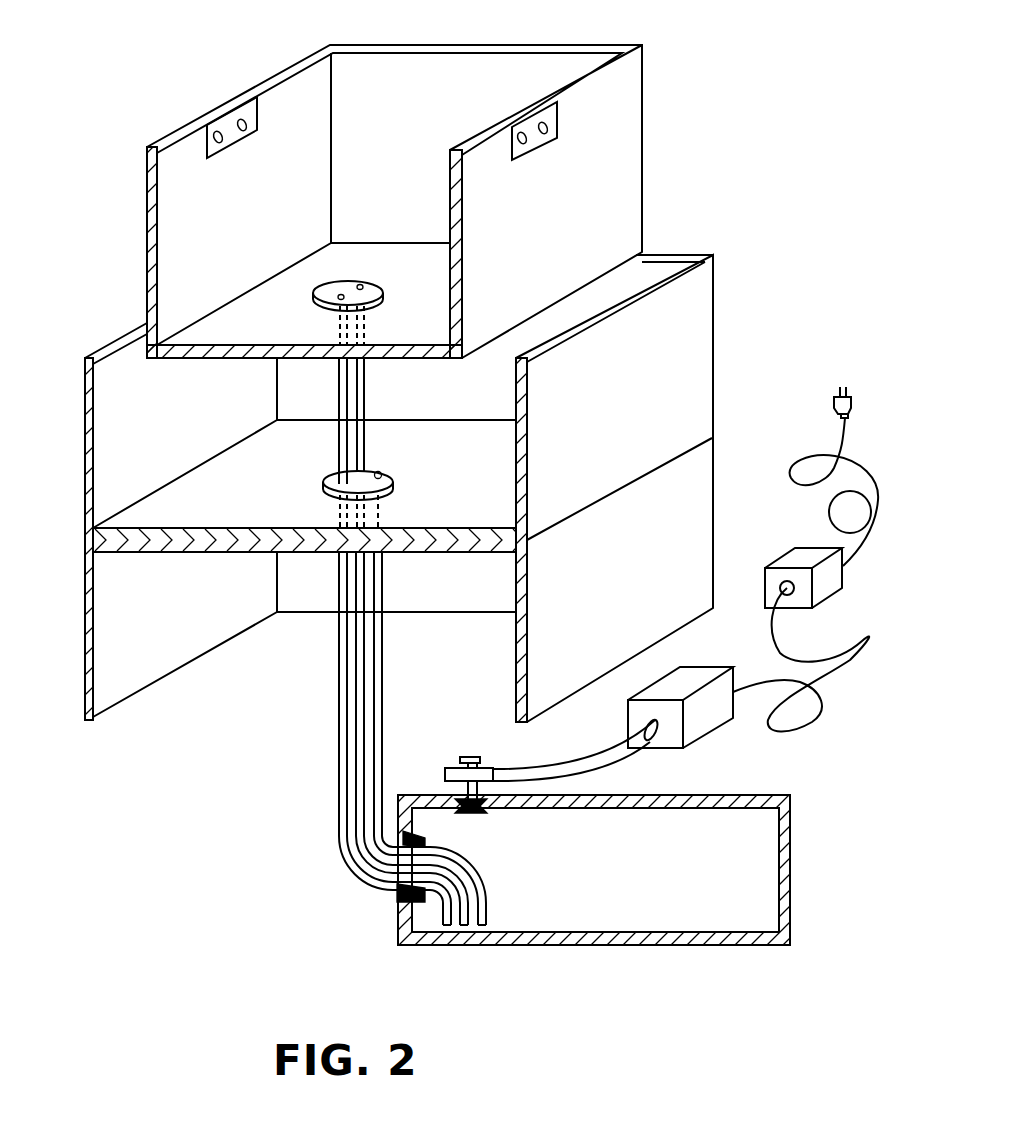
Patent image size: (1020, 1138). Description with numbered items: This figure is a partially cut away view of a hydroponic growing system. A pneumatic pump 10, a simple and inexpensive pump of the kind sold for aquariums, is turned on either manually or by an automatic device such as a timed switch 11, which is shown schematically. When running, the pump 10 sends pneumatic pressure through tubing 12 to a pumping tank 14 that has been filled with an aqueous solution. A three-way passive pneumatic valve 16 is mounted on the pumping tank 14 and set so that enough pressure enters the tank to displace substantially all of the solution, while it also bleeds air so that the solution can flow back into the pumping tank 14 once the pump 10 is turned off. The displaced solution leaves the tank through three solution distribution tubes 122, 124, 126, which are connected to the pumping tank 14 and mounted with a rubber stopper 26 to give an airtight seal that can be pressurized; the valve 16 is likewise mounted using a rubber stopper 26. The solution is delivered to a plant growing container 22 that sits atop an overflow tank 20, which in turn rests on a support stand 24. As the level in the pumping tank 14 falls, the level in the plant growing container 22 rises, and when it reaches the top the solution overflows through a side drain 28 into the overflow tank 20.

The pneumatic pump 10 is at (697, 728).
The timed switch 11 is at (833, 592).
The tubing 12 is at (602, 757).
The pumping tank 14 is at (605, 947).
The passive pneumatic valve 16 is at (458, 767).
The overflow tank 20 is at (403, 488).
The plant growing container 22 is at (145, 248).
The support stand 24 is at (82, 633).
The rubber stopper 26 is at (490, 812).
The side drain 28 is at (232, 118).
The solution distribution tube 122 is at (339, 688).
The solution distribution tube 124 is at (355, 652).
The solution distribution tube 126 is at (384, 668).